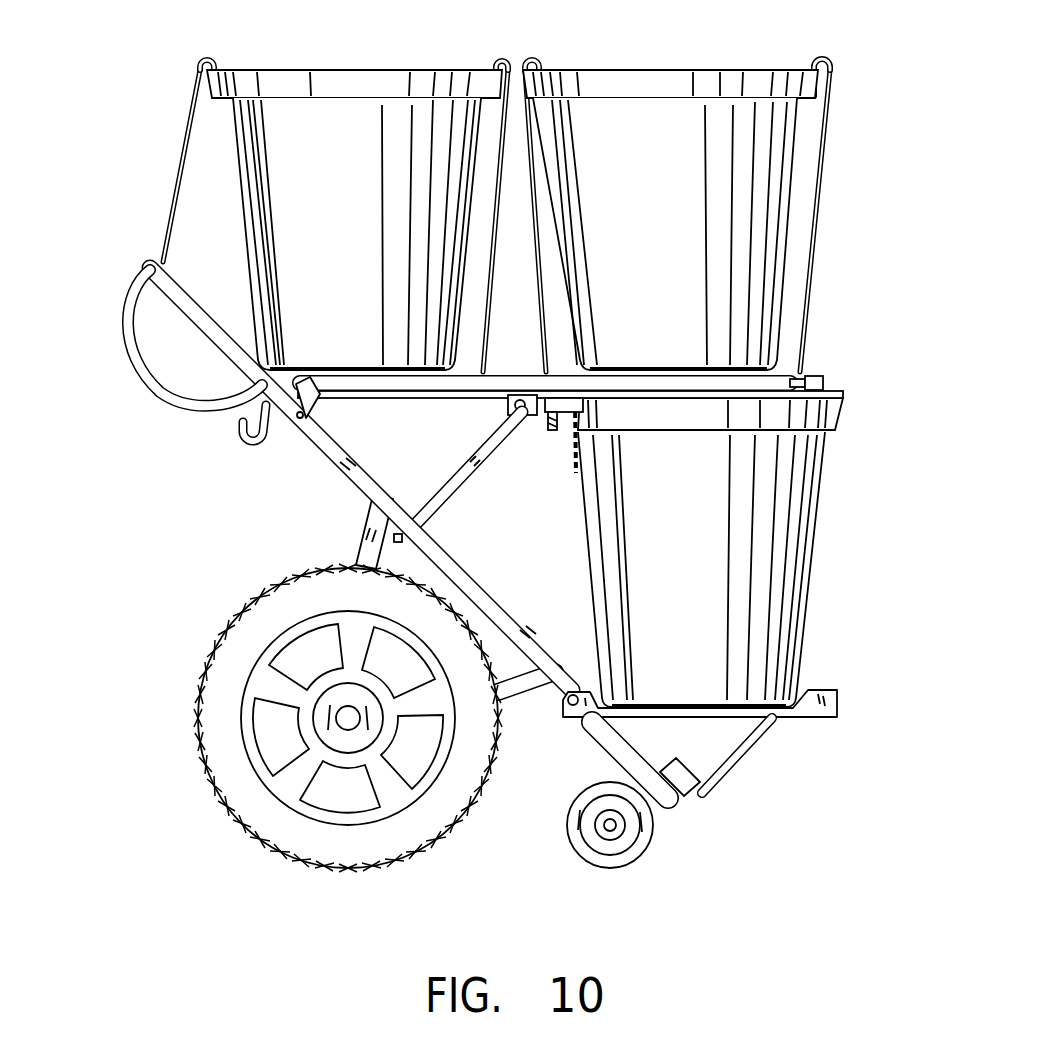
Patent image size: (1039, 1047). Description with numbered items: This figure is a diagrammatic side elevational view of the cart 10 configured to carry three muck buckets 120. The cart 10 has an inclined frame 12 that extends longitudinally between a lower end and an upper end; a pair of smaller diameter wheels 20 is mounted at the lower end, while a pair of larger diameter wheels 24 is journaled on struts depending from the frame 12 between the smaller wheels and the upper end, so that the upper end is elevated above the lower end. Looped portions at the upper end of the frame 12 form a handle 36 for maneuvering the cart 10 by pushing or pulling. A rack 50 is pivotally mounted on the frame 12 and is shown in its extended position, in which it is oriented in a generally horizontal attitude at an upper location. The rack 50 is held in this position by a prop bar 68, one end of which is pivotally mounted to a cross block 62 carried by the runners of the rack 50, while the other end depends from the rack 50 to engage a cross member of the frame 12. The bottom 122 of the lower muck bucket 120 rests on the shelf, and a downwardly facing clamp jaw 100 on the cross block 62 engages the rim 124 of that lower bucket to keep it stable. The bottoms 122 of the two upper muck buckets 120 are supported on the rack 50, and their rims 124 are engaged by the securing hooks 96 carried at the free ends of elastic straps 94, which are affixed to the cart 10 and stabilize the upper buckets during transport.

The cart 10 is at (146, 264).
The frame 12 is at (470, 577).
The smaller diameter wheels 20 is at (648, 856).
The larger diameter wheels 24 is at (200, 722).
The handle 36 is at (137, 370).
The rack 50 is at (656, 376).
The cross block 62 is at (522, 394).
The bar 68 is at (470, 456).
The elastic straps 94 is at (172, 152).
The securing hook 96 is at (207, 60).
The clamp jaw 100 is at (548, 430).
The muck buckets 120 is at (549, 357).
The bottom 122 is at (372, 380).
The rim 124 is at (236, 70).